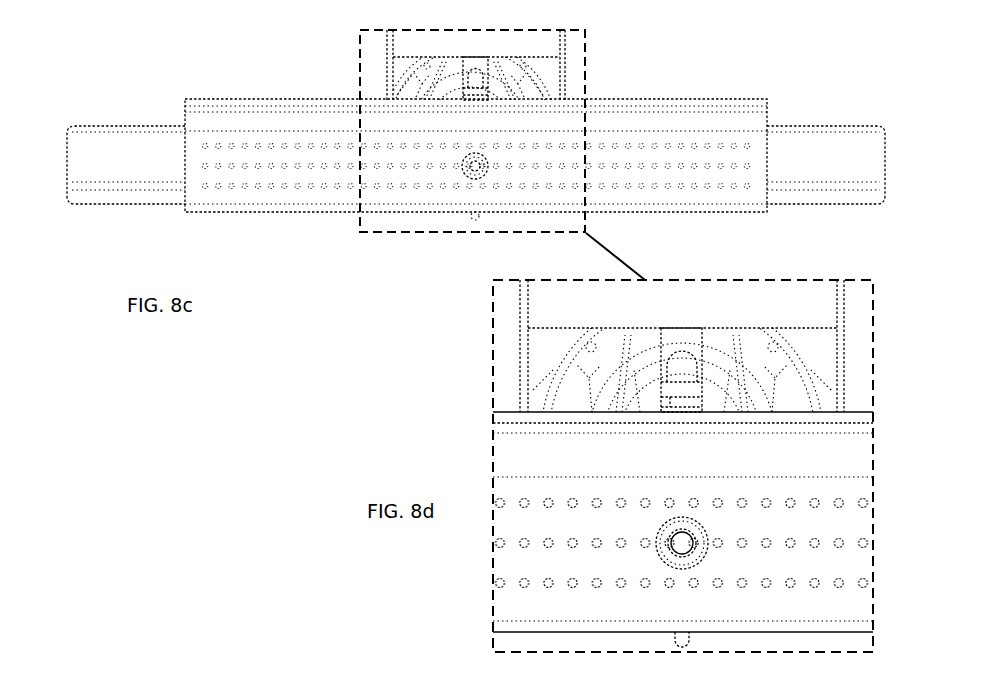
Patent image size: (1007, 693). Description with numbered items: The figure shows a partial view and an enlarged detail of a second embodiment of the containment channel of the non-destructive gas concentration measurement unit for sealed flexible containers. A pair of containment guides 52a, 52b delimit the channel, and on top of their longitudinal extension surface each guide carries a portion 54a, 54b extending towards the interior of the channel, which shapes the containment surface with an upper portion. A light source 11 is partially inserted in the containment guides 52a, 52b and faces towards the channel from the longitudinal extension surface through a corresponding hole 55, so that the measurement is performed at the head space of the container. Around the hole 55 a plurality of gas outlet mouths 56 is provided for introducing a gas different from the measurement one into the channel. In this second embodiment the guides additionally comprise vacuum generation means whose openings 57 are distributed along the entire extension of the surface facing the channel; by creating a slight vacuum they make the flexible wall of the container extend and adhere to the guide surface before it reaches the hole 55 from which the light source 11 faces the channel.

In FIG. 8c, the light source 11 is at (552, 67).
In FIG. 8d, the light source 11 is at (782, 358).
In FIG. 8c, the portion extending towards the interior of the containment channel 54a is at (489, 128).
In FIG. 8c, the portion extending towards the interior of the containment channel 54b is at (660, 118).
In FIG. 8c, the containment guide 52a is at (499, 125).
In FIG. 8c, the containment guide 52b is at (810, 153).
In FIG. 8c, the hole 55 is at (475, 166).
In FIG. 8d, the hole 55 is at (682, 543).
In FIG. 8d, the gas outlet mouth 56 is at (700, 550).
In FIG. 8d, the opening 57 is at (524, 583).